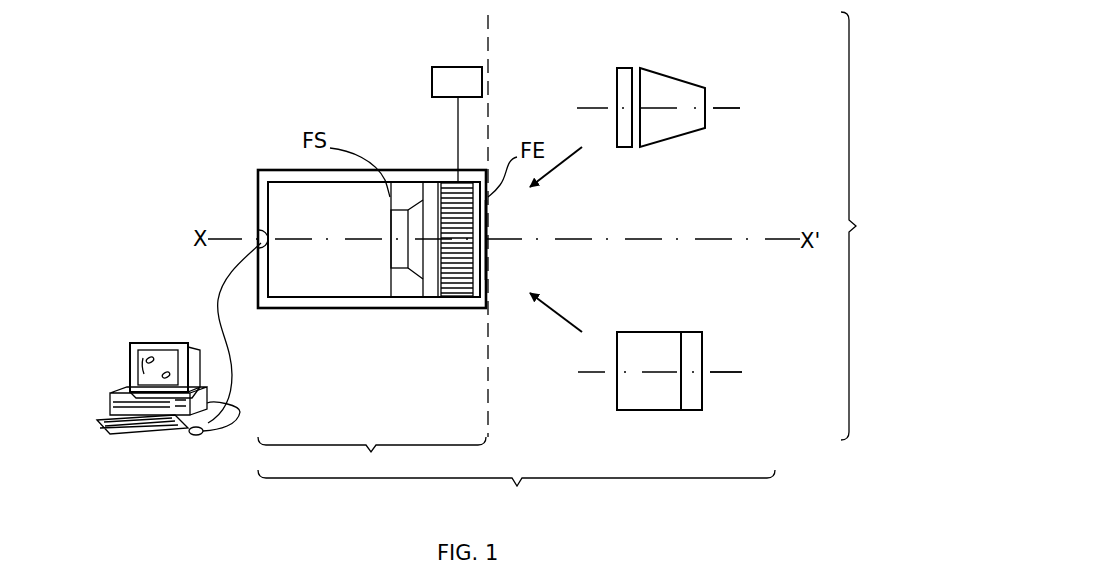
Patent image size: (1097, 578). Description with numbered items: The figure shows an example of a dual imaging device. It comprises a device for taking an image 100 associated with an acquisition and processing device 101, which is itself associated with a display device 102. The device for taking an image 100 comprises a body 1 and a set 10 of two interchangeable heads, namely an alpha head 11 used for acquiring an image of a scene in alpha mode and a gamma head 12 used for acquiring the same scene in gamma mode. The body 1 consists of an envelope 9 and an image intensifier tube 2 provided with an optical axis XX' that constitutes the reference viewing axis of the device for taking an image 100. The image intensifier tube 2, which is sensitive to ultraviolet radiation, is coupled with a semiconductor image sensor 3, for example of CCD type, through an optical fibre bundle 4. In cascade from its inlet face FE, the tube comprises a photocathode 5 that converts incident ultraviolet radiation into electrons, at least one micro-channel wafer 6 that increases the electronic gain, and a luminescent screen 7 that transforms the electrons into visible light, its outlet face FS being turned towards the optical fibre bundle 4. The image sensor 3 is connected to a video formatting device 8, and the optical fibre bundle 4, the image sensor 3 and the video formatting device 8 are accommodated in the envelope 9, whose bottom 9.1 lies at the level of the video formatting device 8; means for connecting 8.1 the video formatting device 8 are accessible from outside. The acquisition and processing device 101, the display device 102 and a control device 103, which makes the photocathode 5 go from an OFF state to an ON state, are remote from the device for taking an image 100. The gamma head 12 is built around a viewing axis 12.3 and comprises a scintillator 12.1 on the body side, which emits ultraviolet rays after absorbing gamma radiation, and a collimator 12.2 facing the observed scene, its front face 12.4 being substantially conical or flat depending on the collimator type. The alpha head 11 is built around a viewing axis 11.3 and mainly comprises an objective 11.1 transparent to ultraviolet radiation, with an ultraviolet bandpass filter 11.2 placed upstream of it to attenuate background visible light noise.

The body 1 is at (372, 457).
The image intensifier tube 2 is at (458, 290).
The semiconductor image sensor 3 is at (397, 272).
The optical fibre bundle 4 is at (413, 278).
The photocathode 5 is at (487, 218).
The micro-channel wafer 6 is at (448, 187).
The luminescent screen 7 is at (432, 188).
The video formatting device 8 is at (312, 283).
The means for connecting 8.1 is at (255, 237).
The envelope 9 is at (303, 177).
The bottom 9.1 is at (258, 205).
The set of interchangeable heads 10 is at (866, 226).
The alpha head 11 is at (677, 328).
The objective 11.1 is at (625, 385).
The ultraviolet bandpass filter 11.2 is at (695, 388).
The viewing axis 11.3 is at (732, 367).
The gamma head 12 is at (678, 152).
The scintillator 12.1 is at (625, 92).
The collimator 12.2 is at (683, 90).
The viewing axis 12.3 is at (733, 108).
The front face 12.4 is at (707, 95).
The device for taking an image 100 is at (516, 491).
The acquisition and processing device 101 is at (148, 440).
The display device 102 is at (158, 340).
The control device 103 is at (442, 70).